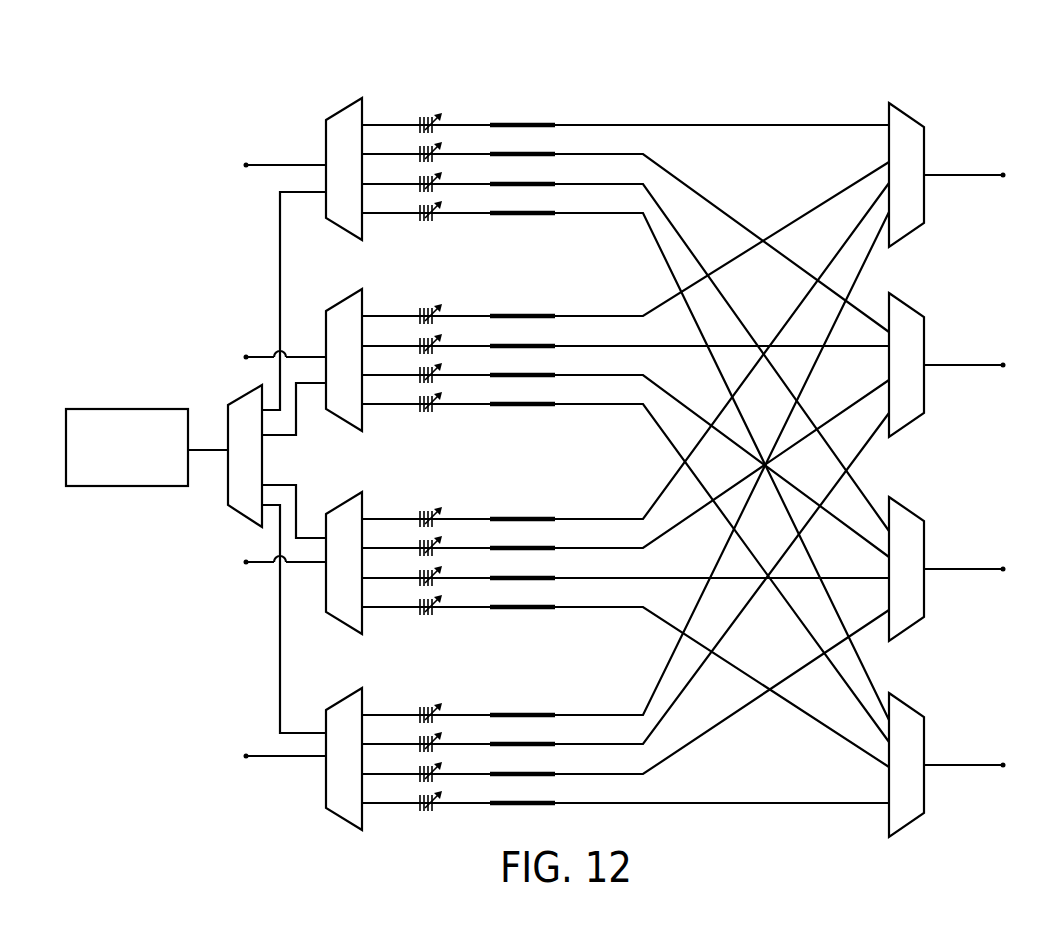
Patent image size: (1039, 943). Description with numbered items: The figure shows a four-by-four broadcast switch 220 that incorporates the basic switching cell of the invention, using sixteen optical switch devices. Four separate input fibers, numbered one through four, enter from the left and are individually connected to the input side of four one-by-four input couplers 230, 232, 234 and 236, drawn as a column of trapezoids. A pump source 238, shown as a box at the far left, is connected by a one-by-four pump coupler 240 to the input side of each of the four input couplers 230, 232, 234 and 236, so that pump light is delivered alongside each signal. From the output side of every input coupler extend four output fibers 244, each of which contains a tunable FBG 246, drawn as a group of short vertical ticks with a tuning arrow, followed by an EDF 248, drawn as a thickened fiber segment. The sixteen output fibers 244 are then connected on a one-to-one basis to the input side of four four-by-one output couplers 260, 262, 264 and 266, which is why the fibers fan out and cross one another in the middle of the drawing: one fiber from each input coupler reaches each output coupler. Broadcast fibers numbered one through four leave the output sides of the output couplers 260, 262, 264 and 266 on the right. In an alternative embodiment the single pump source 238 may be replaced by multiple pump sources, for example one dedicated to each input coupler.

The 4×4 broadcast switch 220 is at (753, 71).
The 1×4 input coupler 230 is at (346, 106).
The 1×4 input coupler 232 is at (346, 296).
The 1×4 input coupler 234 is at (346, 501).
The 1×4 input coupler 236 is at (346, 697).
The pump source 238 is at (108, 407).
The 1×4 pump coupler 240 is at (227, 405).
The output fiber 244 is at (583, 123).
The tunable FBG 246 is at (427, 115).
The EDF 248 is at (520, 109).
The 4×1 output coupler 260 is at (914, 121).
The 4×1 output coupler 262 is at (908, 305).
The 4×1 output coupler 264 is at (908, 509).
The 4×1 output coupler 266 is at (904, 705).